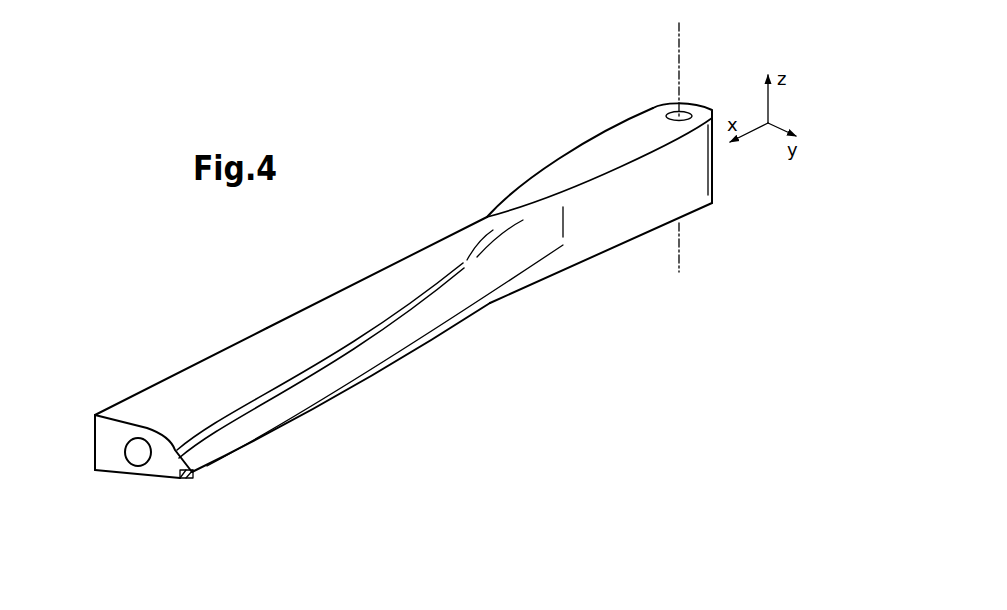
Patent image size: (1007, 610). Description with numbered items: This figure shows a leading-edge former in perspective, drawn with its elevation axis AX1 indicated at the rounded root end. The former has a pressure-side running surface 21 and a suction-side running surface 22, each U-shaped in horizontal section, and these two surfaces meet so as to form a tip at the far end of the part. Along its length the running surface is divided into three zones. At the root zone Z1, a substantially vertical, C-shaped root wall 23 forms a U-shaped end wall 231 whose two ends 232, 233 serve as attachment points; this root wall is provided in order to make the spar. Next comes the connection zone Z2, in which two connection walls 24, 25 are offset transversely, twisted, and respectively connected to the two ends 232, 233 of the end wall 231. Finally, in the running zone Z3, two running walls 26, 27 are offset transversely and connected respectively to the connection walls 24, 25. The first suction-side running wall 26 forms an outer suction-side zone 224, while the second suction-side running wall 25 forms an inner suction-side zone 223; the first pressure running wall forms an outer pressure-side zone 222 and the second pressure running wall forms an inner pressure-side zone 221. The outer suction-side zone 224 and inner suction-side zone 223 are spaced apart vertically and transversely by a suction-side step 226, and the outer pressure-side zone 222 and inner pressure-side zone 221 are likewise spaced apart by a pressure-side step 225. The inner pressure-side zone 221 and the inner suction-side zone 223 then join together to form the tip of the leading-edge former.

The pressure-side running surface 21 is at (152, 488).
The suction-side running surface 22 is at (152, 358).
The root wall 23 is at (712, 208).
The connection wall 24 is at (487, 215).
The connection wall 25 is at (512, 253).
The running wall 26 is at (235, 360).
The running wall 27 is at (323, 382).
The inner pressure-side zone 221 is at (218, 462).
The outer pressure-side zone 222 is at (128, 476).
The inner suction-side zone 223 is at (433, 344).
The outer suction-side zone 224 is at (267, 327).
The pressure-side step 225 is at (188, 479).
The suction-side step 226 is at (100, 473).
The end wall 231 is at (703, 108).
The end of the end wall 232 is at (577, 145).
The end of the end wall 233 is at (647, 232).
The root zone Z1 is at (640, 104).
The connection zone Z2 is at (533, 313).
The running zone Z3 is at (318, 434).
The axis AX1 is at (681, 247).